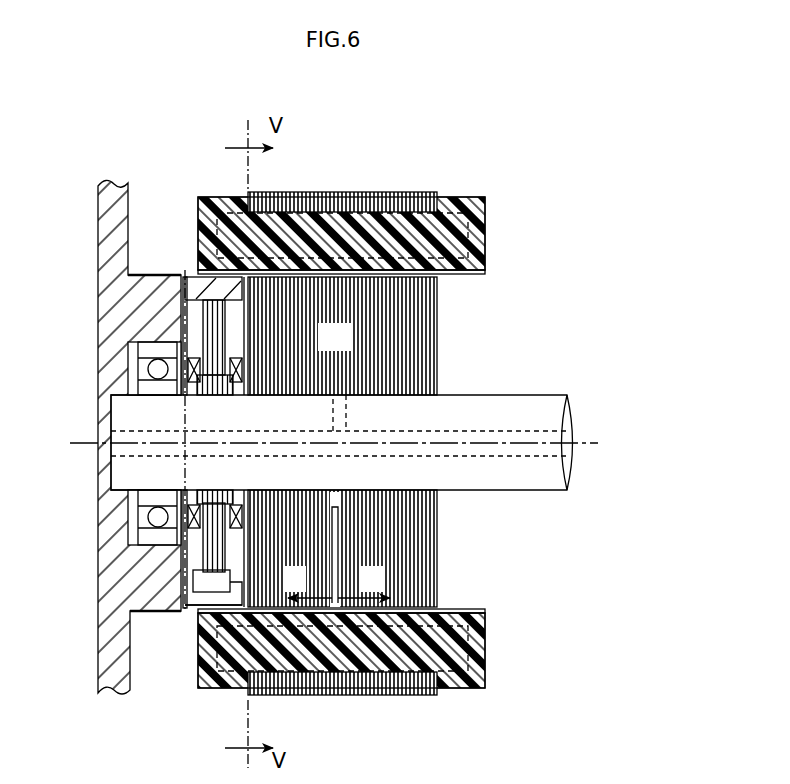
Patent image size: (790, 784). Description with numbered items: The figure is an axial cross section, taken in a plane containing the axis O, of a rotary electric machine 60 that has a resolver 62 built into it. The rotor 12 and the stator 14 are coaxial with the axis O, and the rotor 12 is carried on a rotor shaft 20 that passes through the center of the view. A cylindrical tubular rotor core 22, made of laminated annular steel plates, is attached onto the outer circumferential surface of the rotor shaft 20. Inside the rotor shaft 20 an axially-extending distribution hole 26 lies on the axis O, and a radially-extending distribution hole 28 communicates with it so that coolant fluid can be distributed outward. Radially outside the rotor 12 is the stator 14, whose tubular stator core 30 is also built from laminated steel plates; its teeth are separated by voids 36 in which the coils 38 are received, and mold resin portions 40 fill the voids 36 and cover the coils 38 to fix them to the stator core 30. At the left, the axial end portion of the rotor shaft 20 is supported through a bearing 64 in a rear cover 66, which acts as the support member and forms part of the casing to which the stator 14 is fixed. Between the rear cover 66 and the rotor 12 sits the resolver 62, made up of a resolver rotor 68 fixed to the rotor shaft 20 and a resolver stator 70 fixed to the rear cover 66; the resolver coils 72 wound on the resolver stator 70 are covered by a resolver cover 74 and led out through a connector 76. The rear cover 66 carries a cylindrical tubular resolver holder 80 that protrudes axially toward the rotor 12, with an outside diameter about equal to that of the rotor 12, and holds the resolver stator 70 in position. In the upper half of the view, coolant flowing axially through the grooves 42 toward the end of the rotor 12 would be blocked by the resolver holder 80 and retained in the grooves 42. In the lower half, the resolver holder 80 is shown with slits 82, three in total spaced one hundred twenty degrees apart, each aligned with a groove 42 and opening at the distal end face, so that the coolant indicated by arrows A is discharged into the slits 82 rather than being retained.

The rotor 12 is at (396, 442).
The stator 14 is at (205, 184).
The rotor shaft 20 is at (500, 405).
The rotor core 22 is at (323, 349).
The axially-extending distribution hole 26 is at (514, 452).
The radially-extending distribution hole 28 is at (343, 394).
The stator core 30 is at (418, 703).
The voids 36 is at (393, 215).
The coils 38 is at (457, 193).
The mold resin portions 40 is at (339, 227).
The grooves 42 is at (462, 274).
The rotary electric machine 60 is at (563, 192).
The resolver 62 is at (196, 547).
The bearing 64 is at (156, 373).
The rear cover 66 is at (110, 223).
The resolver rotor 68 is at (212, 499).
The resolver stator 70 is at (214, 318).
The resolver coils 72 is at (199, 374).
The resolver cover 74 is at (199, 518).
The connector 76 is at (210, 585).
The resolver holder 80 is at (215, 292).
The slits 82 is at (187, 607).